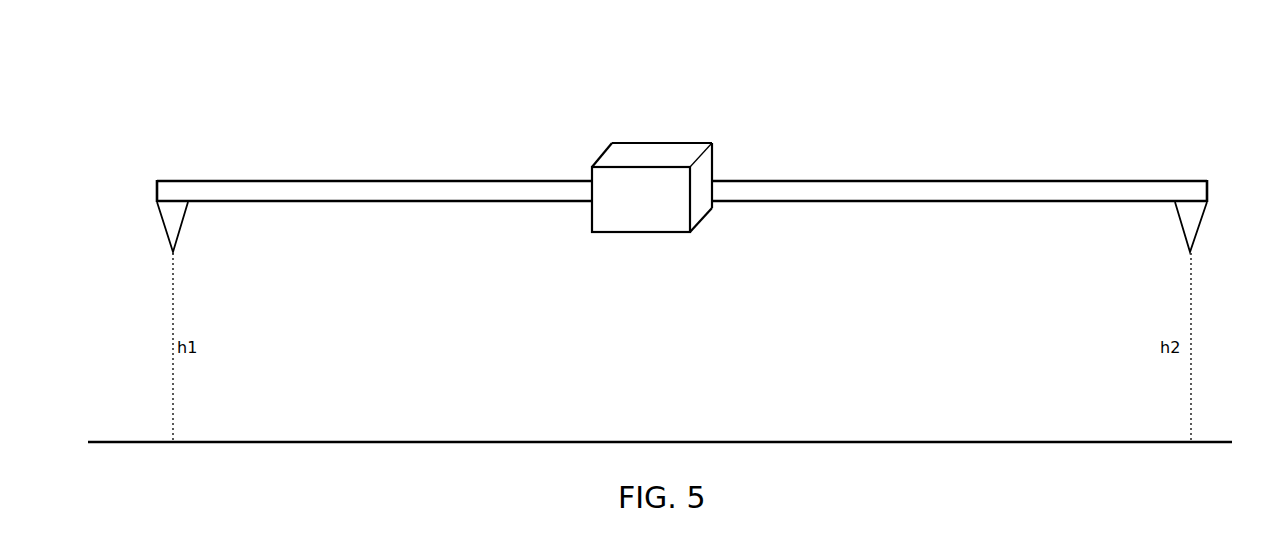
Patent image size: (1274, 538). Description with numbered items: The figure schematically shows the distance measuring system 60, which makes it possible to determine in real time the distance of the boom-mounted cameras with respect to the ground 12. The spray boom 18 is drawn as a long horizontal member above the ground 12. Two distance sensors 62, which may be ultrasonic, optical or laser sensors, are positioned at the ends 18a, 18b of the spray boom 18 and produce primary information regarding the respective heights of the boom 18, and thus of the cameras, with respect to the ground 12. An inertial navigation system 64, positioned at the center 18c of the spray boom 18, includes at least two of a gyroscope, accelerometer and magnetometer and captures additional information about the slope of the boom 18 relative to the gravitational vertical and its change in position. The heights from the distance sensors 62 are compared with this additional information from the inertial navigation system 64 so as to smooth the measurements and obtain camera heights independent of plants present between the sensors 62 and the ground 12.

The ground 12 is at (347, 441).
The spray boom 18 is at (306, 180).
The end of the spray boom 18a is at (164, 180).
The end of the spray boom 18b is at (1207, 180).
The center of the spray boom 18c is at (660, 183).
The distance measuring system 60 is at (372, 108).
The distance sensors 62 is at (162, 227).
The inertial navigation system 64 is at (620, 232).